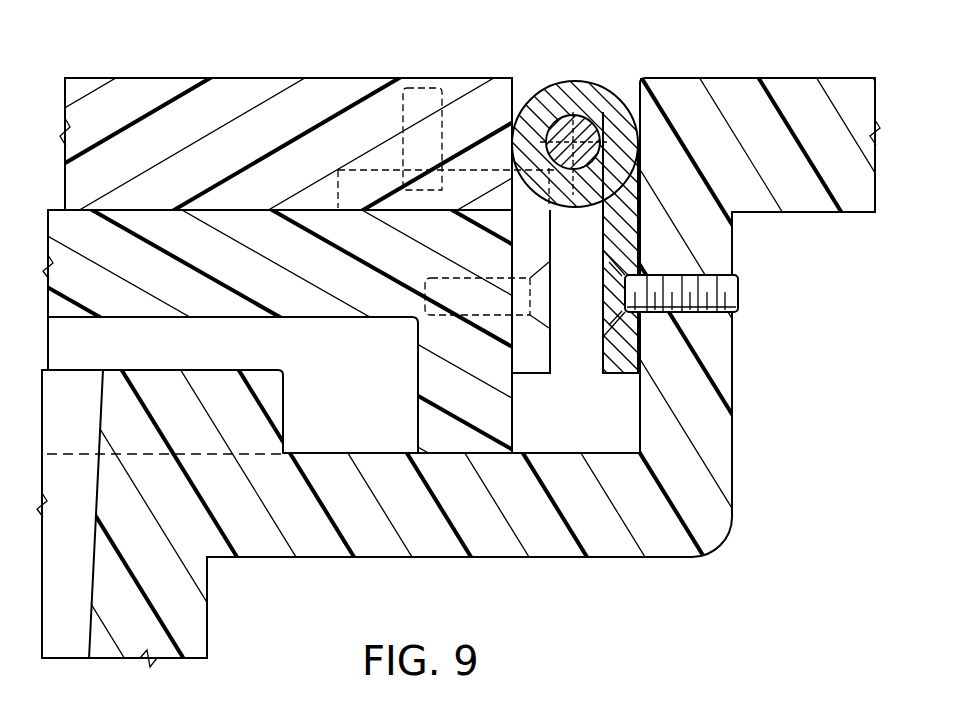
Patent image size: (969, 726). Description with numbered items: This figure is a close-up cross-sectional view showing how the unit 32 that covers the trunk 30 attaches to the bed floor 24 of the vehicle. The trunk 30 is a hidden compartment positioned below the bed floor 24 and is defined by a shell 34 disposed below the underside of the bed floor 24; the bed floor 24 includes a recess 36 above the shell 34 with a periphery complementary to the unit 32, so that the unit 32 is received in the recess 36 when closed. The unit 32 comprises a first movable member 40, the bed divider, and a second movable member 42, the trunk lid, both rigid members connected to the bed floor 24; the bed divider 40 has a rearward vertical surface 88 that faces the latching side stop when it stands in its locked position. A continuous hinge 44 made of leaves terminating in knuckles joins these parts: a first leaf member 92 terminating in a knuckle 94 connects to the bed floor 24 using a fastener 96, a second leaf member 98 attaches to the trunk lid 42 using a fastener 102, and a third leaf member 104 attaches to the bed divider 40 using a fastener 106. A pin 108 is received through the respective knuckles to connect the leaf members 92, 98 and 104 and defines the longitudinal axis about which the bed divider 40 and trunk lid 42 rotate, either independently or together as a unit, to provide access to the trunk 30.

The bed floor 24 is at (803, 75).
The trunk 30 is at (62, 652).
The unit 32 is at (118, 68).
The shell 34 is at (175, 625).
The recess 36 is at (338, 432).
The first movable member 40 is at (258, 78).
The second movable member 42 is at (60, 210).
The hinge 44 is at (590, 76).
The rearward vertical surface 88 is at (157, 213).
The first leaf member 92 is at (620, 365).
The knuckle 94 is at (556, 97).
The fastener 96 is at (723, 290).
The second leaf member 98 is at (533, 363).
The fastener 102 is at (413, 333).
The third leaf member 104 is at (358, 186).
The fastener 106 is at (428, 90).
The pin 108 is at (588, 131).